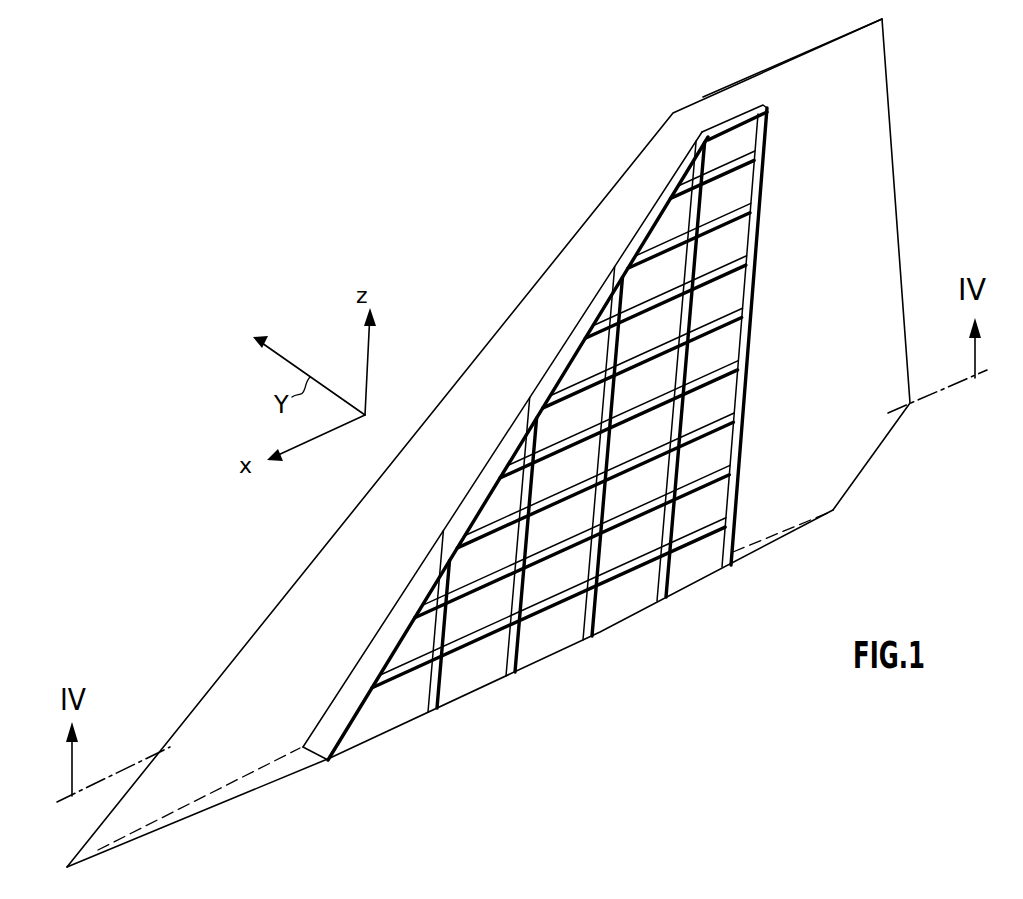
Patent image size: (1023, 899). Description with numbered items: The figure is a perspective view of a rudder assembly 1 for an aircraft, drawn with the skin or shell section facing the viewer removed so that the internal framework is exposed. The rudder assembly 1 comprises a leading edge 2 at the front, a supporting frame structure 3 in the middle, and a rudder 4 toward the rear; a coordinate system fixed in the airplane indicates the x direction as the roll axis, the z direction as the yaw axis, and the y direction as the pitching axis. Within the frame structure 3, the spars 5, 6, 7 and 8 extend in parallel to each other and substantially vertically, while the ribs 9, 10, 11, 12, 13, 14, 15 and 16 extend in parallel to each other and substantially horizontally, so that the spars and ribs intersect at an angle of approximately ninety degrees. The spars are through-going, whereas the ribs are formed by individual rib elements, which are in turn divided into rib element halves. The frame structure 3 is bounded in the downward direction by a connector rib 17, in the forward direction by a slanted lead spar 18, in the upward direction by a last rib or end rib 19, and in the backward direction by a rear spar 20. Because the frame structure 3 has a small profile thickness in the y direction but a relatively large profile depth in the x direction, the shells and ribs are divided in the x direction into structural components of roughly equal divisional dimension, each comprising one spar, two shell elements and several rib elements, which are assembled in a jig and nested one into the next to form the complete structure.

The rudder assembly 1 is at (418, 245).
The leading edge 2 is at (443, 440).
The supporting frame structure 3 is at (629, 638).
The rudder 4 is at (873, 143).
The spar 5 is at (450, 673).
The spar 6 is at (521, 638).
The spar 7 is at (600, 598).
The spar 8 is at (680, 590).
The rib 9 is at (716, 514).
The rib 10 is at (724, 455).
The rib 11 is at (715, 404).
The rib 12 is at (717, 360).
The rib 13 is at (730, 312).
The rib 14 is at (647, 303).
The rib 15 is at (653, 253).
The rib 16 is at (723, 172).
The connector rib 17 is at (373, 731).
The lead spar 18 is at (378, 658).
The end rib 19 is at (752, 113).
The rear spar 20 is at (773, 127).